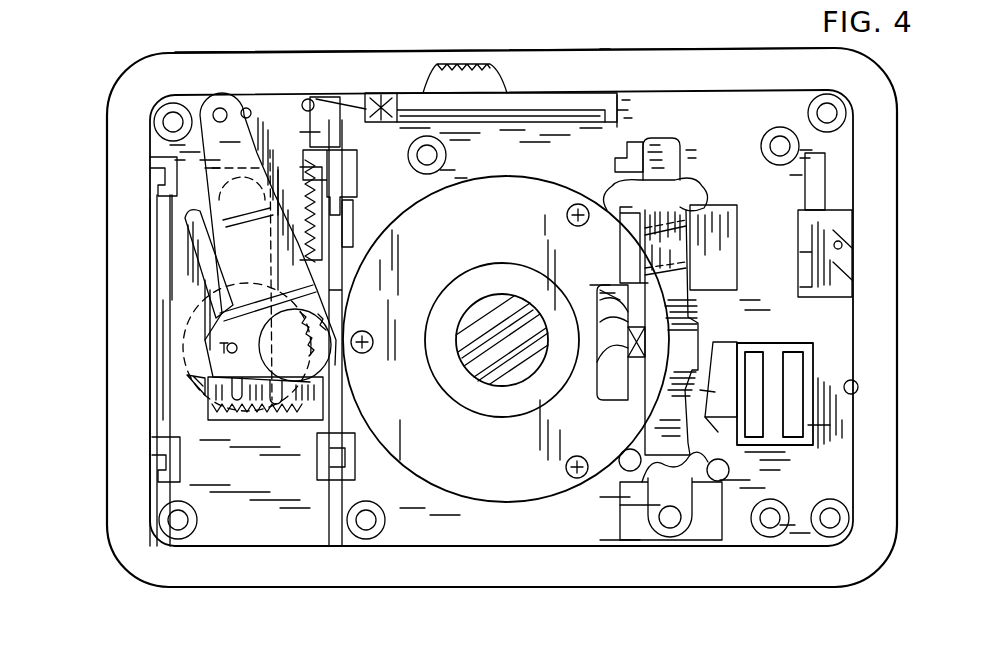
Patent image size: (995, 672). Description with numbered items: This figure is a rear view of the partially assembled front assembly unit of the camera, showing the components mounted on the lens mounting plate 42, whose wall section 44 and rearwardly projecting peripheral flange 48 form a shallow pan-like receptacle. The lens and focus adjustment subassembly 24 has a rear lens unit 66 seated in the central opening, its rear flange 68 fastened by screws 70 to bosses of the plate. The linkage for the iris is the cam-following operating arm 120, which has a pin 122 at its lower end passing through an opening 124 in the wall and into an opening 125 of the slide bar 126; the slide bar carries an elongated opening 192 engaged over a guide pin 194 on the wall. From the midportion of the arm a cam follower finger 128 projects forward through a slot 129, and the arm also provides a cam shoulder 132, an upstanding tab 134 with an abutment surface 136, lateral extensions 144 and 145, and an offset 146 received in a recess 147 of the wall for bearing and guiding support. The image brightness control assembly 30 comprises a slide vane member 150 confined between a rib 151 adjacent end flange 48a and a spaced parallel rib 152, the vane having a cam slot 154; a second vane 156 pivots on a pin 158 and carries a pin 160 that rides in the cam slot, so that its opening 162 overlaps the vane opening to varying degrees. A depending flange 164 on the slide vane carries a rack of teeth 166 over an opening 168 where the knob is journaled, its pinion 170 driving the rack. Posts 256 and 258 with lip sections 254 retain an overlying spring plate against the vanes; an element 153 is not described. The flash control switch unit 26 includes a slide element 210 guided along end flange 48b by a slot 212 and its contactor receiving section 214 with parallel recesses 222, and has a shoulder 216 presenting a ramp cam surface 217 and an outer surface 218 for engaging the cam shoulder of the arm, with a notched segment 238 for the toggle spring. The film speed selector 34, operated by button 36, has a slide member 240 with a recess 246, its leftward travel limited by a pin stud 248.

The lens and distance or focus adjustment subassembly 24 is at (500, 504).
The flash control switch unit 26 is at (855, 273).
The image brightness control assembly 30 is at (262, 108).
The film speed selector 34 is at (548, 92).
The operating button 36 is at (490, 62).
The lens mounting plate 42 is at (898, 152).
The wall section 44 is at (714, 124).
The rearwardly projecting peripheral flange 48 is at (362, 62).
The end flange 48a is at (160, 220).
The end flange 48b is at (858, 392).
The rear lens unit 66 is at (512, 178).
The rear flange 68 is at (466, 219).
The screws 70 is at (366, 330).
The cam-following operating arm 120 is at (683, 160).
The pin 122 is at (670, 525).
The opening 124 is at (715, 525).
The opening 125 is at (292, 26).
The slide bar 126 is at (362, 25).
The cam follower finger 128 is at (598, 395).
The slot 129 is at (600, 288).
The cam shoulder 132 is at (708, 330).
The upstanding tab 134 is at (617, 155).
The abutment surface 136 is at (672, 140).
The lateral extension 144 is at (650, 478).
The lateral extension 145 is at (625, 190).
The offset 146 is at (636, 256).
The recess 147 is at (725, 208).
The slide vane member 150 is at (173, 255).
The rib 151 is at (156, 232).
The rib / elongated tapered opening 152 is at (352, 215).
The pin 153 is at (262, 400).
The cam slot 154 is at (205, 270).
The second vane 156 is at (220, 148).
The pin 158 is at (200, 103).
The pin 160 is at (182, 350).
The opening 162 is at (298, 368).
The depending flange 164 is at (322, 180).
The rack of teeth 166 is at (300, 172).
The opening 168 is at (178, 329).
The pinion 170 is at (182, 397).
The elongated opening 192 is at (668, 4).
The guide pin 194 is at (607, 24).
The slide element 210 is at (845, 340).
The slot 212 is at (810, 185).
The contactor receiving section 214 is at (830, 425).
The shoulder 216 is at (708, 416).
The ramp cam surface 217 is at (715, 370).
The outer surface 218 is at (702, 394).
The parallel elongated recesses 222 is at (757, 360).
The notched segment 238 is at (843, 244).
The slide member 240 is at (598, 95).
The recess 246 is at (378, 98).
The pin stud 248 is at (310, 98).
The lip sections 254 is at (157, 177).
The posts 256 is at (160, 168).
The posts 258 is at (345, 165).